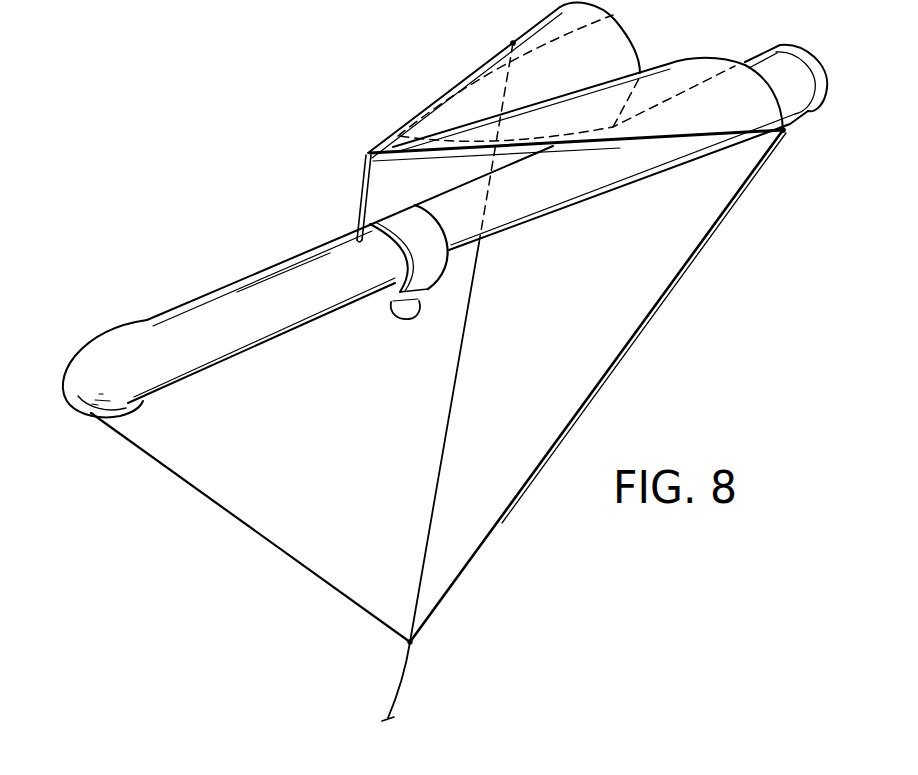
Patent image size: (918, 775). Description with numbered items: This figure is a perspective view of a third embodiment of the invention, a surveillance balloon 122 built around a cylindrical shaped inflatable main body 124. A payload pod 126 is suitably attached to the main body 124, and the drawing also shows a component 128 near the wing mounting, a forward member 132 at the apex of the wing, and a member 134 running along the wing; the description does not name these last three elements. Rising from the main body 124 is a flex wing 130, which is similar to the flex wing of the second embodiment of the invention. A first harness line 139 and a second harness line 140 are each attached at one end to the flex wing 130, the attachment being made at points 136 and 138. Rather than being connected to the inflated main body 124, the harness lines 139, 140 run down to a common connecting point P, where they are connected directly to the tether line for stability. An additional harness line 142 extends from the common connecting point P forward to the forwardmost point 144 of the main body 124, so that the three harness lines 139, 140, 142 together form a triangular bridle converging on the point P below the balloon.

The surveillance balloon 122 is at (191, 290).
The inflatable main body 124 is at (286, 326).
The payload pod 126 is at (414, 317).
The tube upper section 128 is at (462, 185).
The flex wing 130 is at (610, 22).
The apex pin 132 is at (318, 194).
The fin spar 134 is at (547, 100).
The attachment point 136 is at (784, 132).
The attachment point 138 is at (513, 43).
The first harness line 139 is at (466, 322).
The second harness line 140 is at (630, 342).
The additional harness line 142 is at (262, 533).
The forwardmost point 144 is at (70, 398).
The common connecting point P is at (414, 643).